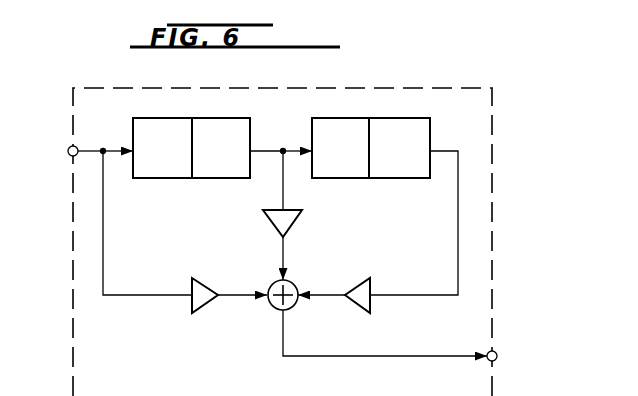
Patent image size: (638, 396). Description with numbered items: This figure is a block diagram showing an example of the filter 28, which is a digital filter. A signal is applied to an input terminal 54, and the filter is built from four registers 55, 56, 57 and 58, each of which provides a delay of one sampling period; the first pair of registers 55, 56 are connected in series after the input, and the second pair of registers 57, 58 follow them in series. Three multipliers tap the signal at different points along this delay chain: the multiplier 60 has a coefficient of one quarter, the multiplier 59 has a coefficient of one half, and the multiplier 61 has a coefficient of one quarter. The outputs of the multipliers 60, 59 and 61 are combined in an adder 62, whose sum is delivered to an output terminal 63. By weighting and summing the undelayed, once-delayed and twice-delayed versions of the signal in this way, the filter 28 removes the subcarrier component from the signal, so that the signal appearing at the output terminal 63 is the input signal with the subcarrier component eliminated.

The filter 28 is at (495, 222).
The input terminal 54 is at (68, 153).
The register 55 is at (167, 180).
The register 56 is at (222, 180).
The register 57 is at (348, 180).
The register 58 is at (408, 180).
The multiplier 59 is at (293, 224).
The multiplier 60 is at (213, 266).
The multiplier 61 is at (352, 310).
The adder 62 is at (272, 308).
The output terminal 63 is at (497, 354).